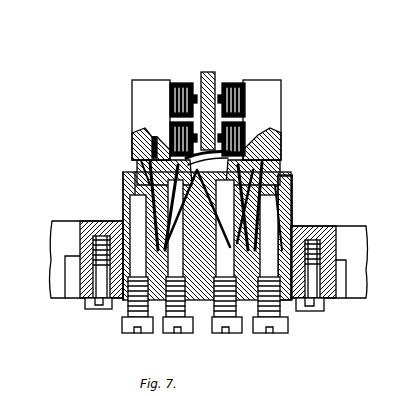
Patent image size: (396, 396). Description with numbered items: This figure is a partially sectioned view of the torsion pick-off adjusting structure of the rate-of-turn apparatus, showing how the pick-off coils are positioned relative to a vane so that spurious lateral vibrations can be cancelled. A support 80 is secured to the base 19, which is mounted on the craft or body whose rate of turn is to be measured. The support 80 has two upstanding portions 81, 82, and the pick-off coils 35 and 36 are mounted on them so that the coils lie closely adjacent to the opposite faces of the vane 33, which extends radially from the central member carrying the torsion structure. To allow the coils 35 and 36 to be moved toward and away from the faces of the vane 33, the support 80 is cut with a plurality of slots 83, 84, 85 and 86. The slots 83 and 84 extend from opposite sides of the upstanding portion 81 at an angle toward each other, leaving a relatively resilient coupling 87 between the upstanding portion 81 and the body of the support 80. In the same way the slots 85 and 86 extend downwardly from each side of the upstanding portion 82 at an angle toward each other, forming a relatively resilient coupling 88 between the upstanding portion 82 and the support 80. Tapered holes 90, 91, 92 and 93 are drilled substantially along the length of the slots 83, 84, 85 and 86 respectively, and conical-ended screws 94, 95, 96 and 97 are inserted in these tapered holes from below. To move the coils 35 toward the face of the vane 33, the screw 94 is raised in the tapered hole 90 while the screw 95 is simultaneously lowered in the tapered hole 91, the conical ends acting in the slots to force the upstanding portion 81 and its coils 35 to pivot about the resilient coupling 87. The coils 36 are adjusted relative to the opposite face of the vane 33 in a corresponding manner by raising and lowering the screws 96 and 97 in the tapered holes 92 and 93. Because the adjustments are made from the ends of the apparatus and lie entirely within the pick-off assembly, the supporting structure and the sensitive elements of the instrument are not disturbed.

The base 19 is at (62, 238).
The vane 33 is at (205, 73).
The pick-off coil 35 is at (170, 125).
The pick-off coil 36 is at (245, 125).
The support 80 is at (122, 197).
The upstanding portion 81 is at (144, 87).
The upstanding portion 82 is at (257, 86).
The slot 83 is at (148, 165).
The slot 84 is at (150, 172).
The slot 85 is at (292, 177).
The slot 86 is at (270, 167).
The resilient coupling 87 is at (128, 217).
The resilient coupling 88 is at (293, 226).
The tapered hole 90 is at (124, 190).
The tapered hole 91 is at (138, 160).
The tapered hole 92 is at (294, 195).
The tapered hole 93 is at (293, 187).
The conical-ended screw 94 is at (122, 326).
The conical-ended screw 95 is at (170, 333).
The conical-ended screw 96 is at (240, 334).
The conical-ended screw 97 is at (290, 334).